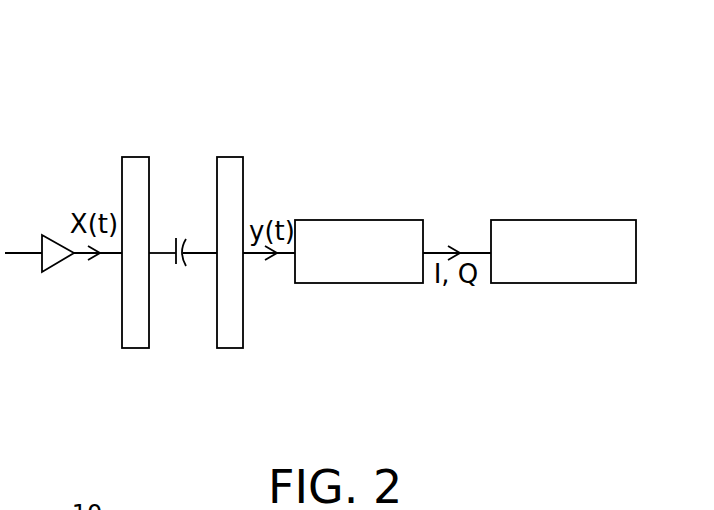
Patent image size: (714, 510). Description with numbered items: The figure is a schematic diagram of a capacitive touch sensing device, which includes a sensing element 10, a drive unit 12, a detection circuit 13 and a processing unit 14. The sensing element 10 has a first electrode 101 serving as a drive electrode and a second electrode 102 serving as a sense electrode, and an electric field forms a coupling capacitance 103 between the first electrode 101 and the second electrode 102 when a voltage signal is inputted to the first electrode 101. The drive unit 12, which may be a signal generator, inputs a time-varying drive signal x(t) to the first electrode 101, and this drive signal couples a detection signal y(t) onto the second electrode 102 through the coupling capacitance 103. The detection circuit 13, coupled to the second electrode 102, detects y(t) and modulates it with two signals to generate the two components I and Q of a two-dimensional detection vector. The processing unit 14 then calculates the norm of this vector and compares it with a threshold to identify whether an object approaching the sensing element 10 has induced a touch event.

The sensing element 10 is at (178, 204).
The first electrode 101 is at (135, 157).
The second electrode 102 is at (230, 157).
The coupling capacitance 103 is at (181, 268).
The drive unit 12 is at (54, 238).
The detection circuit 13 is at (358, 220).
The processing unit 14 is at (565, 220).